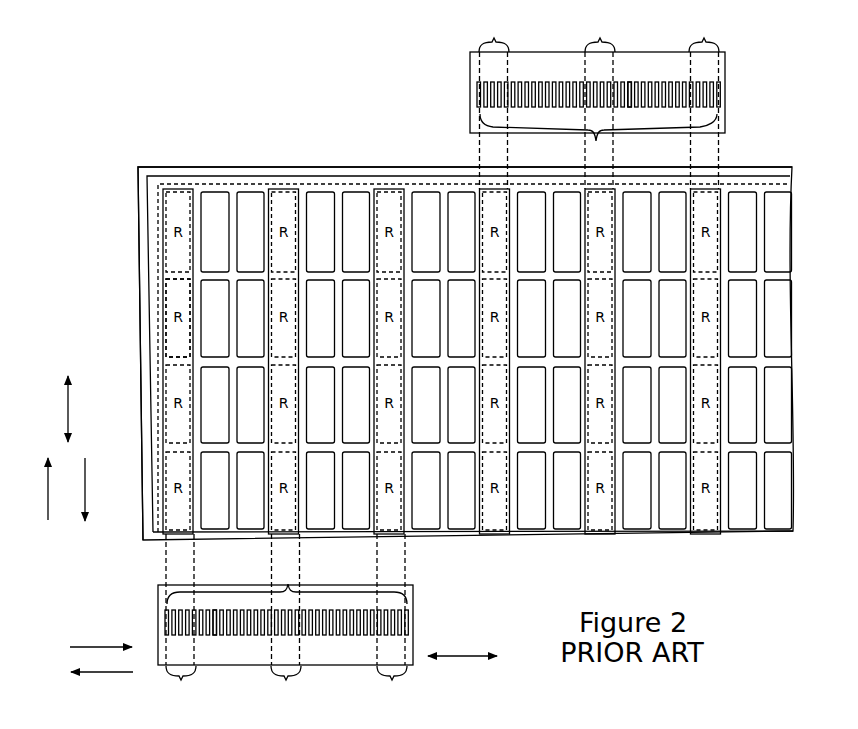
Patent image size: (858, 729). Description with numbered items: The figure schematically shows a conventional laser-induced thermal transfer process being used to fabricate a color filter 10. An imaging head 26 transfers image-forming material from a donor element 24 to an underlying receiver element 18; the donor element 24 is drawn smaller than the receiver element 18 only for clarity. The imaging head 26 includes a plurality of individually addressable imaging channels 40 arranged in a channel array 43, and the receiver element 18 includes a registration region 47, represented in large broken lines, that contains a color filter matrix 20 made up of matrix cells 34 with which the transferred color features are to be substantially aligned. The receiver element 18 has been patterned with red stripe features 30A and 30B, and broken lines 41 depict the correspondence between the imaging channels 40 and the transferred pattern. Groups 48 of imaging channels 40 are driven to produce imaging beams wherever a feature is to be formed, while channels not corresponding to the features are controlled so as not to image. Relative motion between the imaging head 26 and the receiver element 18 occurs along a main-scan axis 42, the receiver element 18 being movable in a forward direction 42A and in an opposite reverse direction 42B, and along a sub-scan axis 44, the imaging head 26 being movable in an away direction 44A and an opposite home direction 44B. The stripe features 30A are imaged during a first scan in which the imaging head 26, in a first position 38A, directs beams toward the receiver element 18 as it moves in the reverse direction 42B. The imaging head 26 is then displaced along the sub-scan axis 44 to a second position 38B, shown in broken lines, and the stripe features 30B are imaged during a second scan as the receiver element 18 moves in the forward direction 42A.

The color filter 10 is at (804, 295).
The receiver element 18 is at (140, 209).
The color filter matrix 20 is at (194, 347).
The donor element 24 is at (150, 393).
The imaging head 26 is at (541, 71).
The stripe features 30A is at (176, 190).
The stripe features 30B is at (500, 534).
The matrix cell 34 is at (201, 299).
The first position 38A is at (427, 623).
The second position 38B is at (735, 108).
The imaging channels 40 is at (442, 359).
The broken lines 41 is at (508, 158).
The main-scan axis 42 is at (66, 398).
The forward direction 42A is at (47, 482).
The reverse direction 42B is at (84, 482).
The channel array 43 is at (627, 75).
The sub-scan axis 44 is at (470, 654).
The away direction 44A is at (98, 637).
The home direction 44B is at (98, 662).
The registration region 47 is at (158, 247).
The groups of imaging channels 48 is at (442, 359).